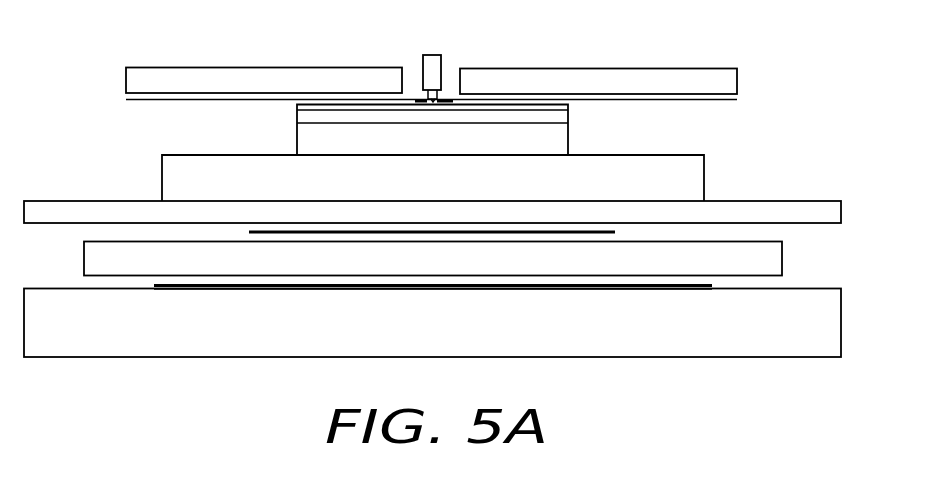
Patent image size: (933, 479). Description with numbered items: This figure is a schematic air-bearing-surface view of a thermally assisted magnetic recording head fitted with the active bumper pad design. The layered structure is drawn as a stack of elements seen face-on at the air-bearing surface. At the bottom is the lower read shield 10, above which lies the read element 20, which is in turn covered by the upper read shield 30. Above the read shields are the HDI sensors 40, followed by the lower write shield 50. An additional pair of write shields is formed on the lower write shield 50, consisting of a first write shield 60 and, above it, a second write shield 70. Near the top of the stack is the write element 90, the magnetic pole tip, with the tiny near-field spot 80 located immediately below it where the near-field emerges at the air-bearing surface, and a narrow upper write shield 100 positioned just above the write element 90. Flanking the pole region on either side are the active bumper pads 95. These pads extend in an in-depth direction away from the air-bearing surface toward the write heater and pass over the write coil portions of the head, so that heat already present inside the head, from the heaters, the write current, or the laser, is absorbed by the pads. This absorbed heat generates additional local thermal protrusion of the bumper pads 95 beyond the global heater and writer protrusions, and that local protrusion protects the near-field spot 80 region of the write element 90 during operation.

The lower read shield 10 is at (827, 327).
The read element 20 is at (712, 287).
The upper read shield 30 is at (772, 261).
The HDI sensors 40 is at (615, 232).
The lower write shield 50 is at (828, 213).
The first write shield 60 is at (692, 180).
The second write shield 70 is at (555, 137).
The near-field spot 80 is at (427, 99).
The write element 90 is at (437, 98).
The active bumper pads 95 is at (138, 80).
The upper write shield 100 is at (432, 66).